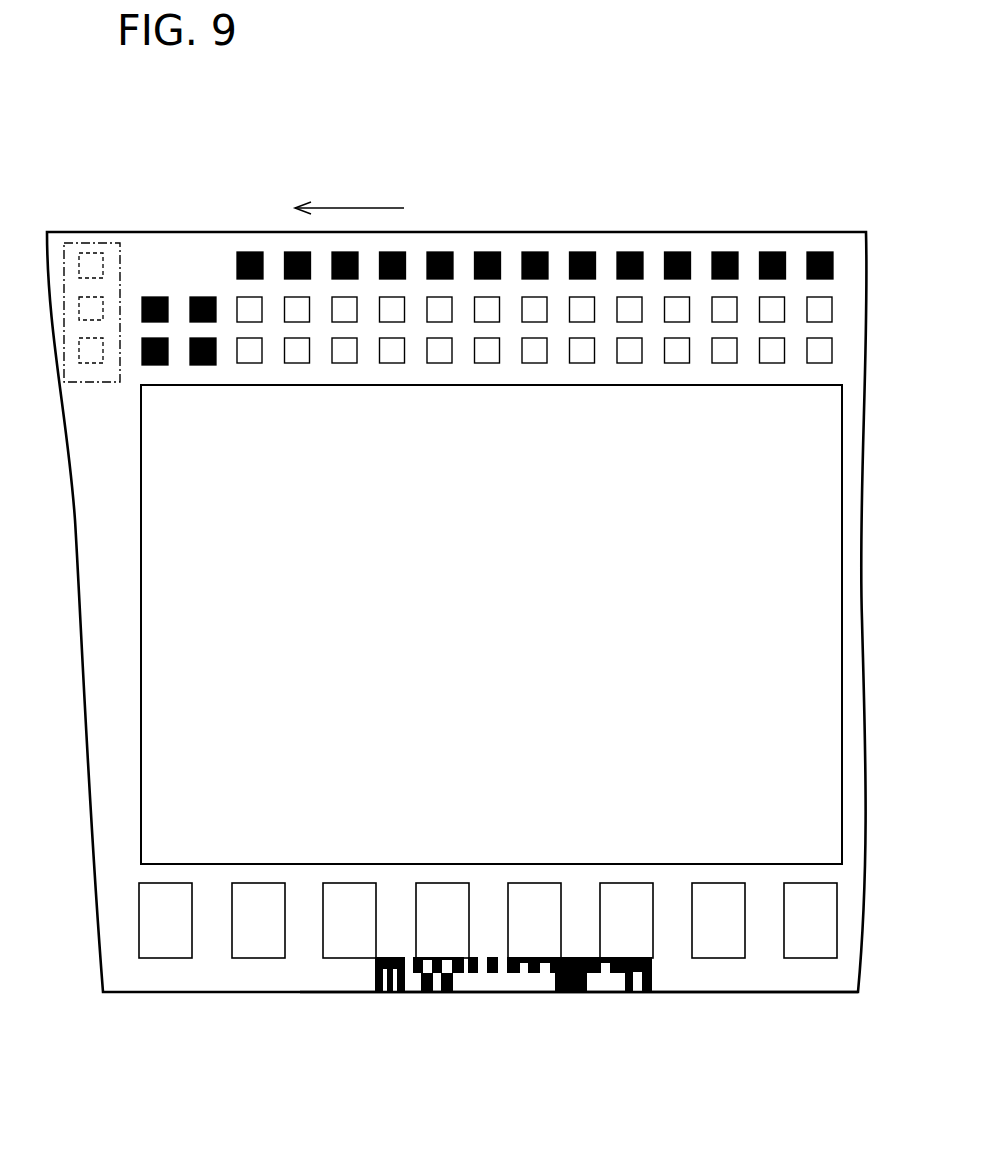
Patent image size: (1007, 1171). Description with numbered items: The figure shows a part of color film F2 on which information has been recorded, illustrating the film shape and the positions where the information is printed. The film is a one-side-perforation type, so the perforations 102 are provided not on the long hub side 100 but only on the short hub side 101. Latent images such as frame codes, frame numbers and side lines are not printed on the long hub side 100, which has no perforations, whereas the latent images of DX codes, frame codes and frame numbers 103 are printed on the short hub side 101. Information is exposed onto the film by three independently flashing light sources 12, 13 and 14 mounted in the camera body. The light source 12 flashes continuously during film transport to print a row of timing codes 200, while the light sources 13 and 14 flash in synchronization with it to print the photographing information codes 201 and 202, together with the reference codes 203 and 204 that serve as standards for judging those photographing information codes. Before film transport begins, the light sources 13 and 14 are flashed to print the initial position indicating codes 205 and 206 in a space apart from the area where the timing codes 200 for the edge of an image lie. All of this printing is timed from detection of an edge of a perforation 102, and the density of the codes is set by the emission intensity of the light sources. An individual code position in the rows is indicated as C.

The long hub side 100 is at (533, 232).
The short hub side 101 is at (697, 992).
The perforations 102 is at (257, 948).
The frame numbers 103 is at (432, 998).
The timing codes 200 is at (814, 248).
The photographing information code 201 is at (838, 307).
The photographing information code 202 is at (812, 368).
The reference code 203 is at (203, 297).
The reference code 204 is at (203, 365).
The initial position indicating code 205 is at (157, 297).
The initial position indicating code 206 is at (157, 365).
The light source 12 is at (91, 355).
The light source 13 is at (97, 305).
The light source 14 is at (82, 267).
The terminal column C is at (837, 355).
The color film F2 is at (793, 977).